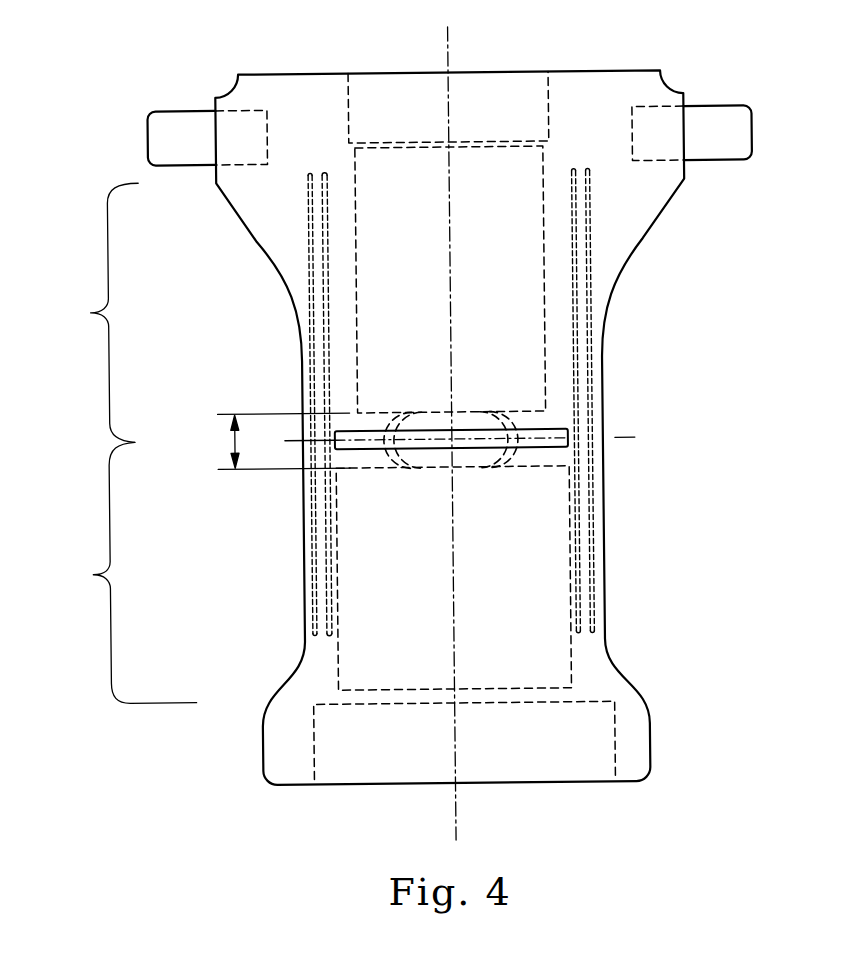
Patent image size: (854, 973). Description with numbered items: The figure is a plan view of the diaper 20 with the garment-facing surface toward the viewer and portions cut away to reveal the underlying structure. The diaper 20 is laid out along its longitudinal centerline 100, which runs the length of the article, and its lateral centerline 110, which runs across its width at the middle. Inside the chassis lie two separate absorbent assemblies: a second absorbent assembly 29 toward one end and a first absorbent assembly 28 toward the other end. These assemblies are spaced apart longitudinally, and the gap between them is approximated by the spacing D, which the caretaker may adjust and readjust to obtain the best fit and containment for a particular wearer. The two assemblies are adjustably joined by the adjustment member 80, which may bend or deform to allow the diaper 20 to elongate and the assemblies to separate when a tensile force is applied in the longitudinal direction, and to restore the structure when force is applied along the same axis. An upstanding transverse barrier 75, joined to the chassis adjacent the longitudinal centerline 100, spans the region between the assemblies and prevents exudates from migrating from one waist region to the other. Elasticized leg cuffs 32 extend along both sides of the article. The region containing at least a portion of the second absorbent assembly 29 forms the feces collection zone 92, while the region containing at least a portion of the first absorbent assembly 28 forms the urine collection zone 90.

The diaper 20 is at (655, 353).
The first absorbent assembly 28 is at (358, 644).
The second absorbent assembly 29 is at (514, 314).
The elasticized leg cuffs 32 is at (320, 550).
The transverse barrier 75 is at (555, 433).
The adjustment member 80 is at (393, 416).
The urine collection zone 90 is at (92, 571).
The feces collection zone 92 is at (92, 309).
The longitudinal centerline 100 is at (453, 46).
The lateral centerline 110 is at (625, 440).
The spacing D is at (234, 440).